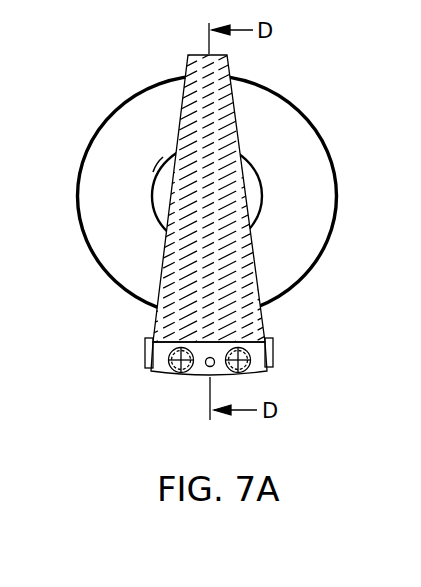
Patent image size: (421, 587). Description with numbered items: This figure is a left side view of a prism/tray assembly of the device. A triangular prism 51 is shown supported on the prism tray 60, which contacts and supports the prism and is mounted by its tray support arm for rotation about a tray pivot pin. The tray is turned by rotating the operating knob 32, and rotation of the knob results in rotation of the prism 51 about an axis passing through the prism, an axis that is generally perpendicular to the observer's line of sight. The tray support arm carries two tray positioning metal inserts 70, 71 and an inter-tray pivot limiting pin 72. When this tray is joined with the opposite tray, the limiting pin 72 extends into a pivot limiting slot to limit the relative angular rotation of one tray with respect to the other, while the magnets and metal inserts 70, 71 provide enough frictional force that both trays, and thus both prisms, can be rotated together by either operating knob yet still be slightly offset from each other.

The left operating knob 32 is at (315, 183).
The left prism 51 is at (214, 88).
The right prism tray 60 is at (273, 352).
The tray positioning metal insert 70 is at (170, 372).
The tray positioning metal insert 71 is at (247, 373).
The inter-tray pivot limiting pin 72 is at (208, 367).